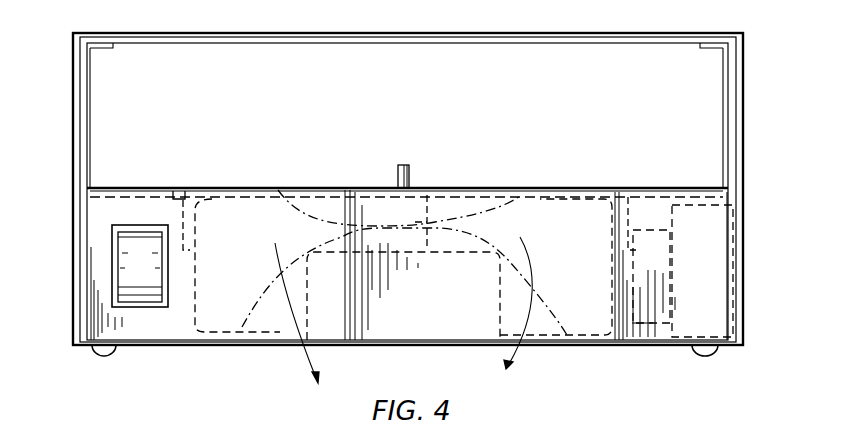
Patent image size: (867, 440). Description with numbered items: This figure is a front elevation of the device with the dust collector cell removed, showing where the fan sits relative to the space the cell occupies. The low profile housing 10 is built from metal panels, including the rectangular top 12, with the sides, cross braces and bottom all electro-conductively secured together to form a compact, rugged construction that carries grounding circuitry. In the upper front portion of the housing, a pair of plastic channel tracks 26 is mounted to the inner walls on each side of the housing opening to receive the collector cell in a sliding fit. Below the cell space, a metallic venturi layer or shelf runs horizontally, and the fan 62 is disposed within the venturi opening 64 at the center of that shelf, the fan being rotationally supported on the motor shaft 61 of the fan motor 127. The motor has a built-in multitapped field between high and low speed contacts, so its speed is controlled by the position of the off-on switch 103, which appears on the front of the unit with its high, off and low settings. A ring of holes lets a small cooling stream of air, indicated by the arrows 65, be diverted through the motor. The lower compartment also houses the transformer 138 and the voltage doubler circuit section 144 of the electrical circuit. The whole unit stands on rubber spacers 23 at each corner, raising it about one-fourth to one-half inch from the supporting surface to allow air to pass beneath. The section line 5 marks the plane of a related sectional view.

The section line 5- 5 is at (72, 52).
The housing 10 is at (402, 199).
The rectangular top 12 is at (360, 33).
The rubber spacers 23 is at (105, 352).
The plastic channel tracks 26 is at (89, 143).
The motor shaft 61 is at (410, 177).
The fan 62 is at (583, 256).
The venturi opening 64 is at (216, 197).
The arrows 65 is at (297, 352).
The off-on switch 103 is at (118, 275).
The fan motor 127 is at (418, 300).
The transformer 138 is at (652, 342).
The voltage doubler circuit section 144 is at (685, 328).